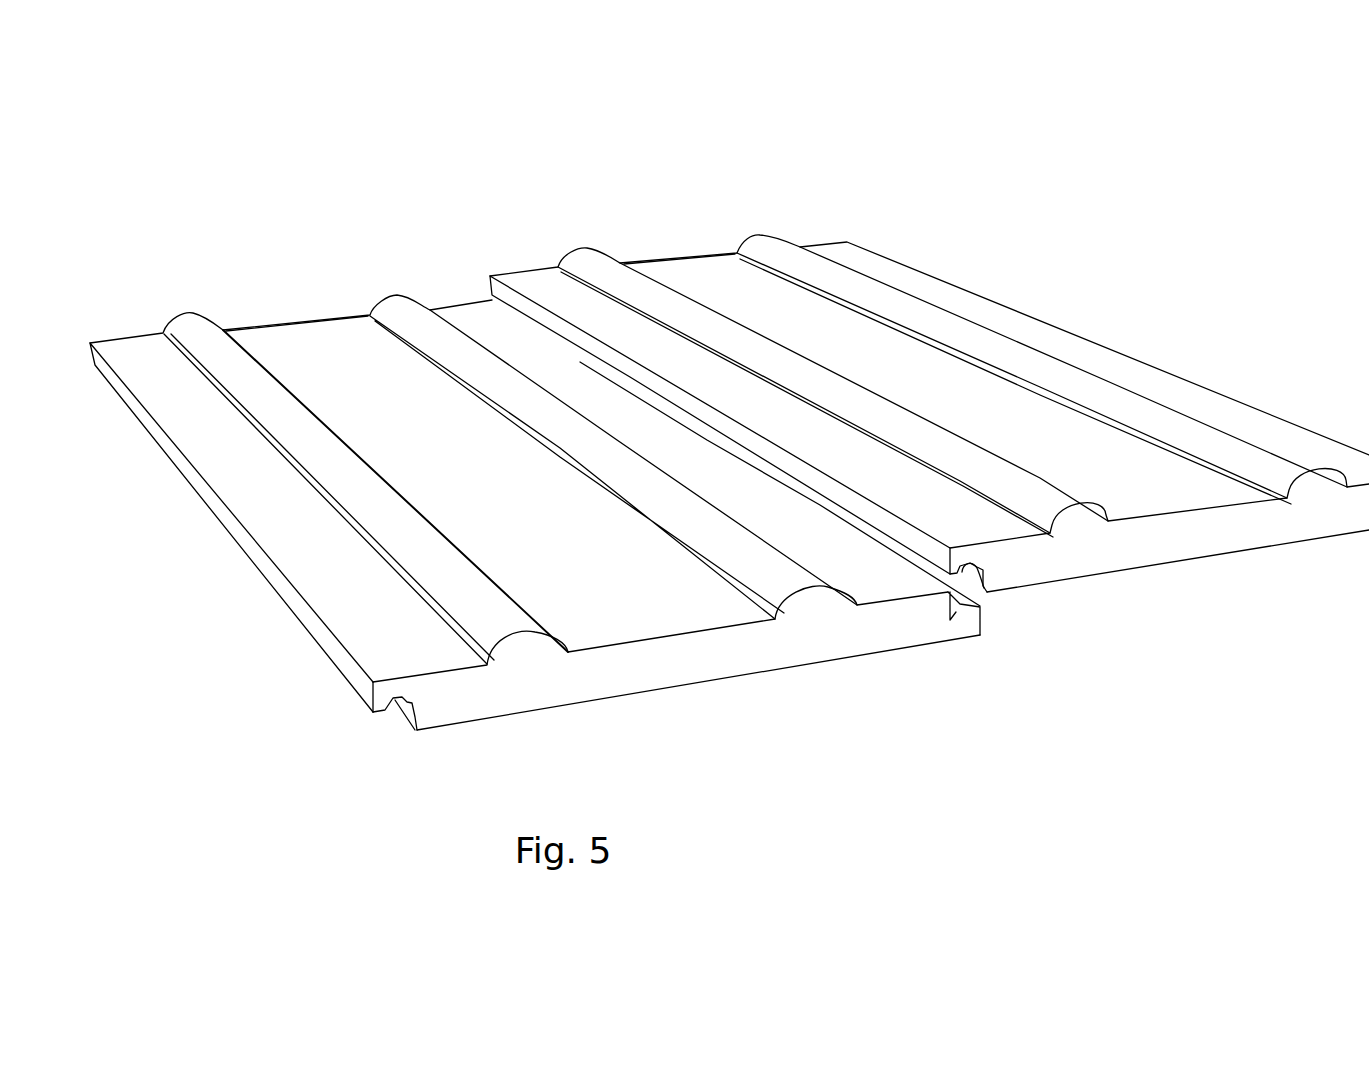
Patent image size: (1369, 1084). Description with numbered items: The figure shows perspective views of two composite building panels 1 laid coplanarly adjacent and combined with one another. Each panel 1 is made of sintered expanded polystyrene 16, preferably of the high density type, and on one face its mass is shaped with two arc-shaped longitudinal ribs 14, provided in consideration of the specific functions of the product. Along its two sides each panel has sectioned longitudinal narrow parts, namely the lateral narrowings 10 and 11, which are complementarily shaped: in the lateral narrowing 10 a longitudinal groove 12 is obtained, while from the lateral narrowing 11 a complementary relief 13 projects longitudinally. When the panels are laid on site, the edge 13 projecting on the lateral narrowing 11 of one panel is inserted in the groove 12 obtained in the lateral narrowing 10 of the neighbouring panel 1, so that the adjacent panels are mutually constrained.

The composite building panel 1 is at (287, 283).
The lateral narrowing 10 is at (306, 545).
The lateral narrowing 11 is at (948, 627).
The longitudinal groove 12 is at (394, 713).
The complementary relief 13 is at (982, 612).
The arc-shaped longitudinal ribs 14 is at (306, 417).
The sintered expanded polystyrene 16 is at (329, 348).